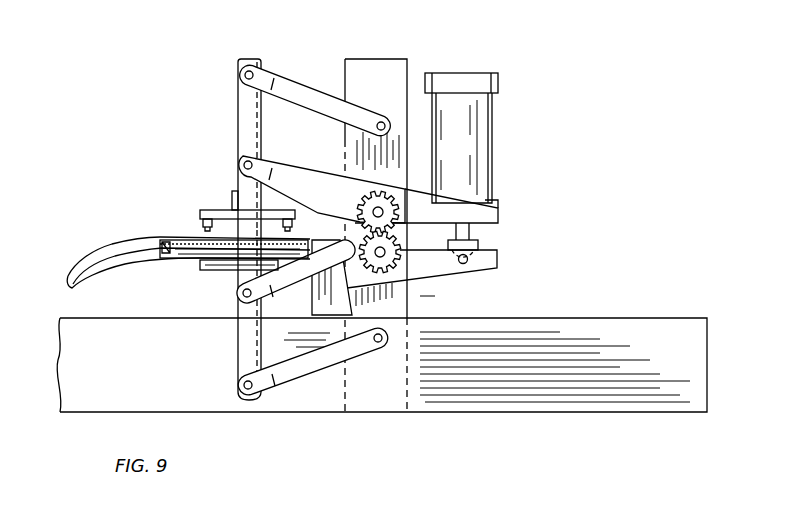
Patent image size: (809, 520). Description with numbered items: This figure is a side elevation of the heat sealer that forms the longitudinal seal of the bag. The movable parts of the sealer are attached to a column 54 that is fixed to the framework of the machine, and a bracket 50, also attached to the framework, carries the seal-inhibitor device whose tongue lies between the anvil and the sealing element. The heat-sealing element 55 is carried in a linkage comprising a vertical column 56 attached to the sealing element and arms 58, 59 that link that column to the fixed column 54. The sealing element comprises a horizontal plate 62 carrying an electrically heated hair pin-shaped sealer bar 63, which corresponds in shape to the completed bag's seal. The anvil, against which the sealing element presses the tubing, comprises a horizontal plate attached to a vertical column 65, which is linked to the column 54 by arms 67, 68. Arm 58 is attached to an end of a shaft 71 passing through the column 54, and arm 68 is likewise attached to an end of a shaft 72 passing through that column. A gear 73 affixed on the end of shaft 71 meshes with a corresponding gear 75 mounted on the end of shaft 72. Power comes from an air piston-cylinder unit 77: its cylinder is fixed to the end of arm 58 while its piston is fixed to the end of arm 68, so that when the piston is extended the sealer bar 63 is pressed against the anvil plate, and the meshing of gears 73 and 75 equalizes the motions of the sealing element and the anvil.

The bracket 50 is at (412, 302).
The column 54 is at (377, 60).
The heat-sealing element 55 is at (211, 200).
The vertical column 56 is at (237, 121).
The arm 58 is at (500, 221).
The arm 59 is at (293, 78).
The horizontal plate 62 is at (200, 213).
The sealer bar 63 is at (205, 231).
The vertical column 65 is at (240, 348).
The arm 67 is at (303, 384).
The arm 68 is at (498, 262).
The shaft 71 is at (338, 173).
The shaft 72 is at (383, 253).
The gear 73 is at (378, 212).
The gear 75 is at (412, 296).
The air piston-cylinder unit 77 is at (493, 141).